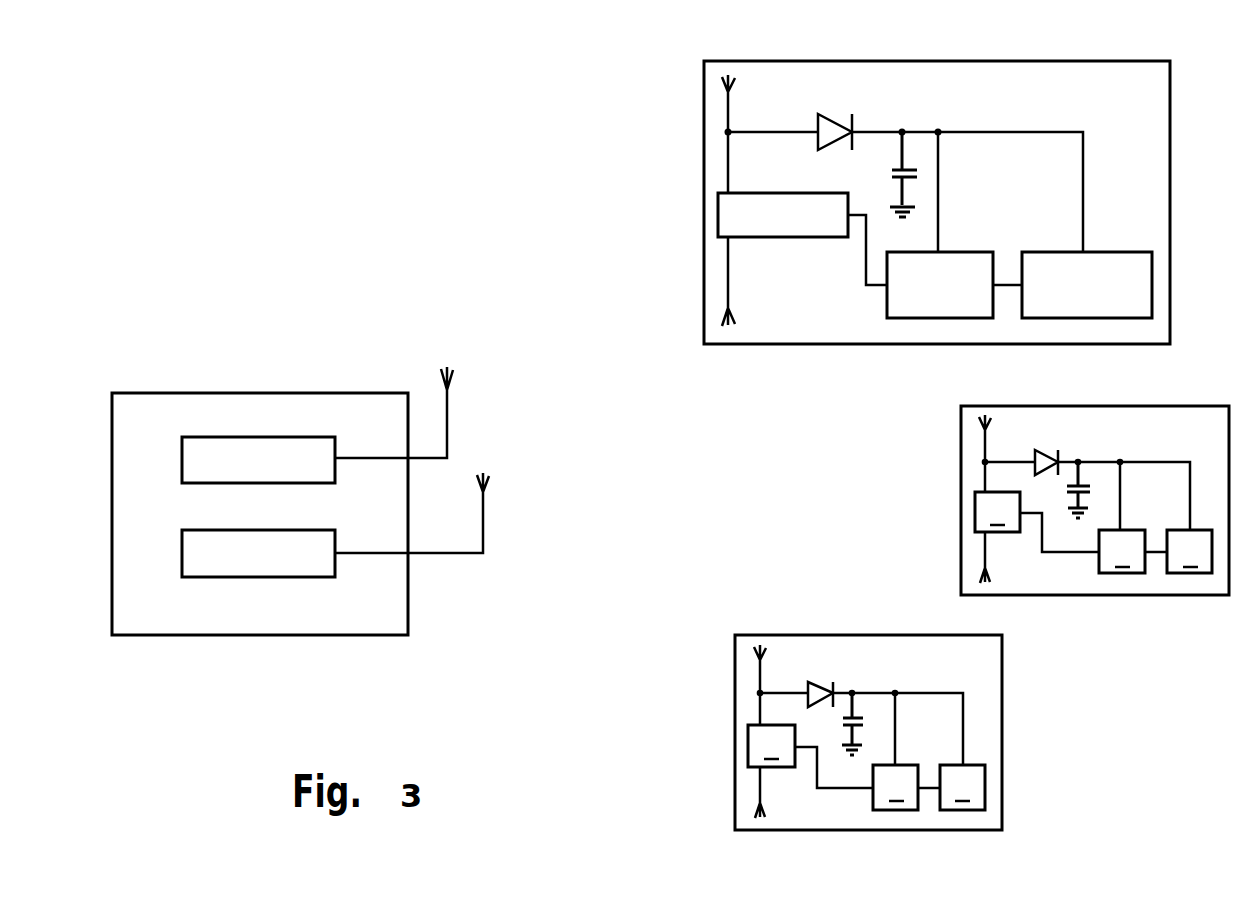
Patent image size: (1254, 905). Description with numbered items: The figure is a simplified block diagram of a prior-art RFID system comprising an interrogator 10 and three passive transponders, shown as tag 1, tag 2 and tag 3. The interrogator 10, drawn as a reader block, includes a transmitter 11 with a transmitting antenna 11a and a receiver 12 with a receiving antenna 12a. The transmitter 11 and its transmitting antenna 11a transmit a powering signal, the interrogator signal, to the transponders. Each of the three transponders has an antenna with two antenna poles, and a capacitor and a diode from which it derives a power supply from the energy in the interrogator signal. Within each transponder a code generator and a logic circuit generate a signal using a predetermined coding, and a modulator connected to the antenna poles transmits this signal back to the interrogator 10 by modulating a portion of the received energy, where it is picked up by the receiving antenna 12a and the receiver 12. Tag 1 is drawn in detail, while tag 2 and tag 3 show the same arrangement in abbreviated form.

The tag 1 is at (645, 197).
The tag 2 is at (928, 478).
The tag 3 is at (708, 714).
The interrogator 10 is at (172, 393).
The transmitter 11 is at (182, 455).
The transmitting antenna 11a is at (458, 382).
The receiver 12 is at (182, 551).
The receiving antenna 12a is at (493, 487).